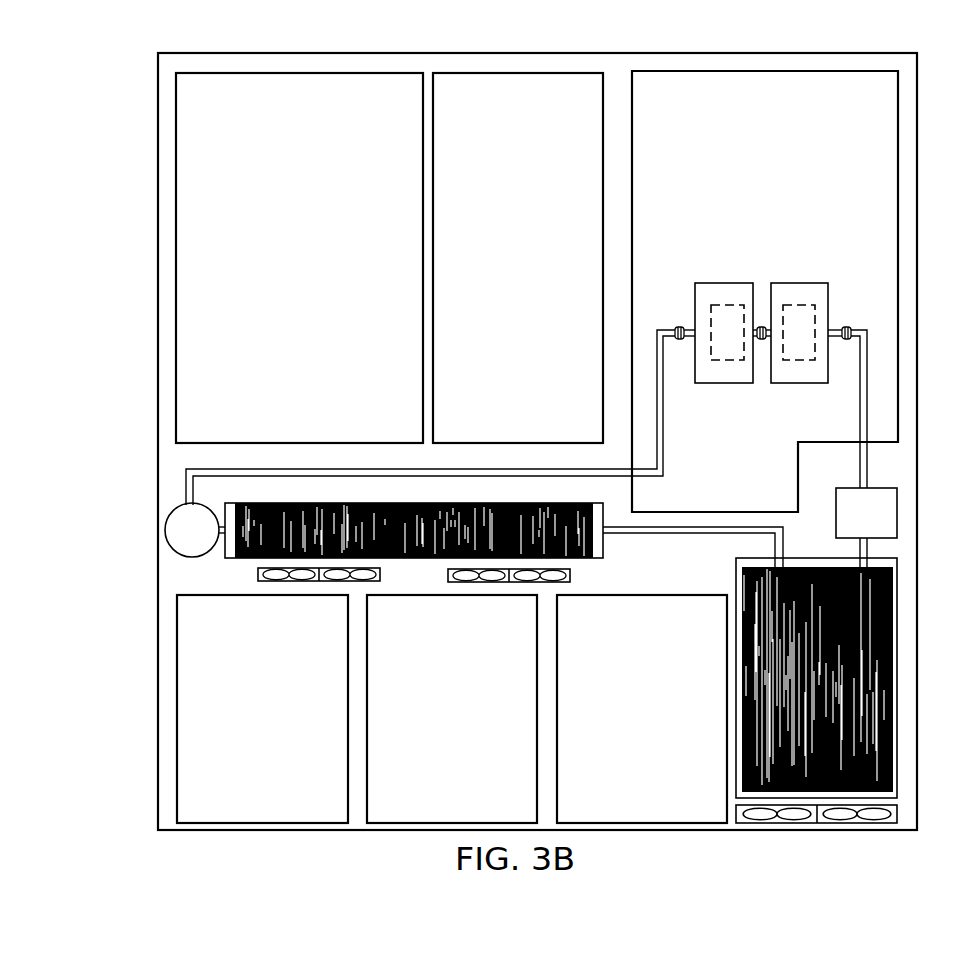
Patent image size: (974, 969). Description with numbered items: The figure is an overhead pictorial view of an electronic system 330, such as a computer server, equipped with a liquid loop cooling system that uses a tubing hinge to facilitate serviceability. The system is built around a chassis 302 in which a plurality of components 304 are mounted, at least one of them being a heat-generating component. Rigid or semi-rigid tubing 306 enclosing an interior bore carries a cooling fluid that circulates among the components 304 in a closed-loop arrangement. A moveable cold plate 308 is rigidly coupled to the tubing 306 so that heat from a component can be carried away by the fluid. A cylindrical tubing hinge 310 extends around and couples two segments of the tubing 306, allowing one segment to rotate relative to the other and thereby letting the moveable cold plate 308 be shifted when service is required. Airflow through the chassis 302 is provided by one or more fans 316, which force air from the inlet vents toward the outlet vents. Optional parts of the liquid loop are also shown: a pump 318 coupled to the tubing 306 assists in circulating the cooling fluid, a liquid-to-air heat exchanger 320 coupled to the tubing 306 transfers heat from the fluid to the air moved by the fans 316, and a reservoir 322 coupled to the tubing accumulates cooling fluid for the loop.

The chassis 302 is at (917, 392).
The components 304 is at (783, 310).
The tubing 306 is at (658, 415).
The moveable cold plate 308 is at (783, 377).
The tubing hinge 310 is at (677, 328).
The fans 316 is at (335, 583).
The pump 318 is at (845, 500).
The liquid-to-air heat exchanger 320 is at (593, 506).
The reservoir 322 is at (192, 548).
The electronic system 330 is at (107, 345).